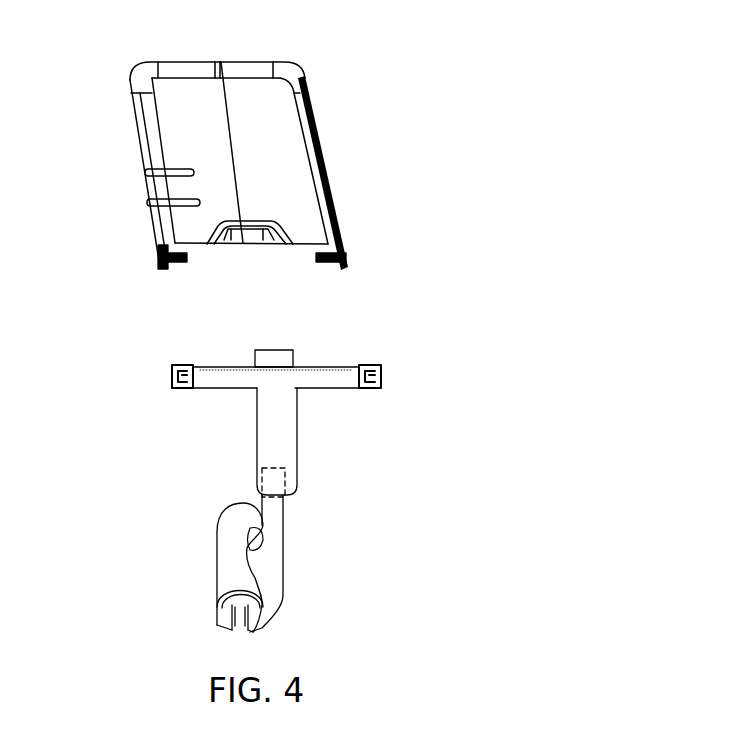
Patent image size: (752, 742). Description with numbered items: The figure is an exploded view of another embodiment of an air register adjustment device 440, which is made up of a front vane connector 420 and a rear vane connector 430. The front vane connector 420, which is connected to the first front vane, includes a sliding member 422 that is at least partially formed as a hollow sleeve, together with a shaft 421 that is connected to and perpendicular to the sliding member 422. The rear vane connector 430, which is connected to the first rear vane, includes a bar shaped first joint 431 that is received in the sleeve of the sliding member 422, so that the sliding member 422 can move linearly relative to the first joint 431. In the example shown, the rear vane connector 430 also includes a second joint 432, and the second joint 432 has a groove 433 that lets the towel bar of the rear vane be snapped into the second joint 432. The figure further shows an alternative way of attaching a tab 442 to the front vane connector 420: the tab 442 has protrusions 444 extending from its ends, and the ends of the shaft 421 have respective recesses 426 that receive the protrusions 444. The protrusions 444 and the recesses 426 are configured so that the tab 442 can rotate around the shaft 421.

The front vane connector 420 is at (270, 388).
The shaft 421 is at (213, 377).
The sliding member 422 is at (270, 410).
The recesses 426 is at (173, 378).
The rear vane connector 430 is at (266, 560).
The first joint 431 is at (272, 547).
The second joint 432 is at (233, 533).
The groove 433 is at (237, 623).
The air register adjustment device 440 is at (547, 377).
The tab 442 is at (293, 150).
The protrusions 444 is at (347, 258).